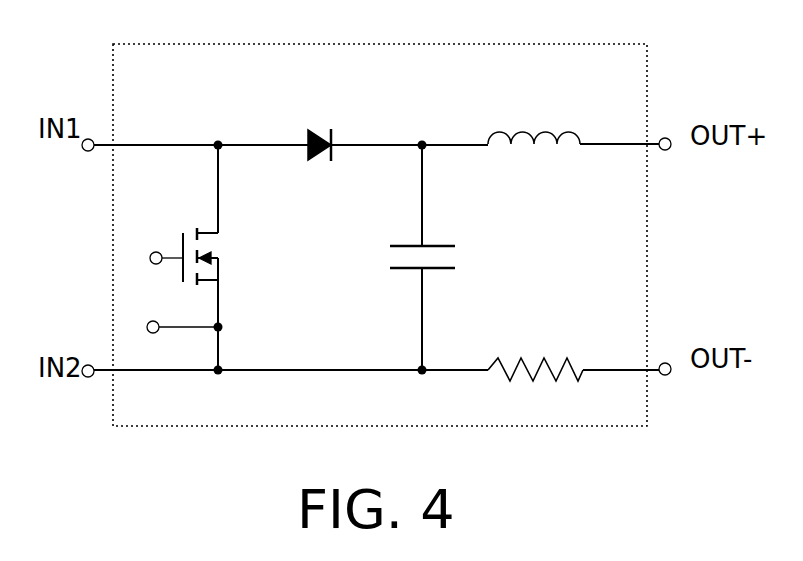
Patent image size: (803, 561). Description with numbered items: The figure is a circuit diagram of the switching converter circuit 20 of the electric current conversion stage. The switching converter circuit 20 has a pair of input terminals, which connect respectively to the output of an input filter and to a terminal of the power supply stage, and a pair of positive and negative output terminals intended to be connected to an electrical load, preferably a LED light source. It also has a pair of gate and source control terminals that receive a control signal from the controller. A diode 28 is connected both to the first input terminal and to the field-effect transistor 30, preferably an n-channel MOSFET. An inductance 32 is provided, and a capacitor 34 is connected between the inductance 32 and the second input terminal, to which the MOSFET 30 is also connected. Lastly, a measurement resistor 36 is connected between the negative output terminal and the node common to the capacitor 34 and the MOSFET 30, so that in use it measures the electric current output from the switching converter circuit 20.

The switching converter circuit 20 is at (228, 430).
The diode 28 is at (323, 136).
The field-effect transistor 30 is at (220, 265).
The inductance 32 is at (552, 128).
The capacitor 34 is at (437, 245).
The measurement resistor 36 is at (528, 360).